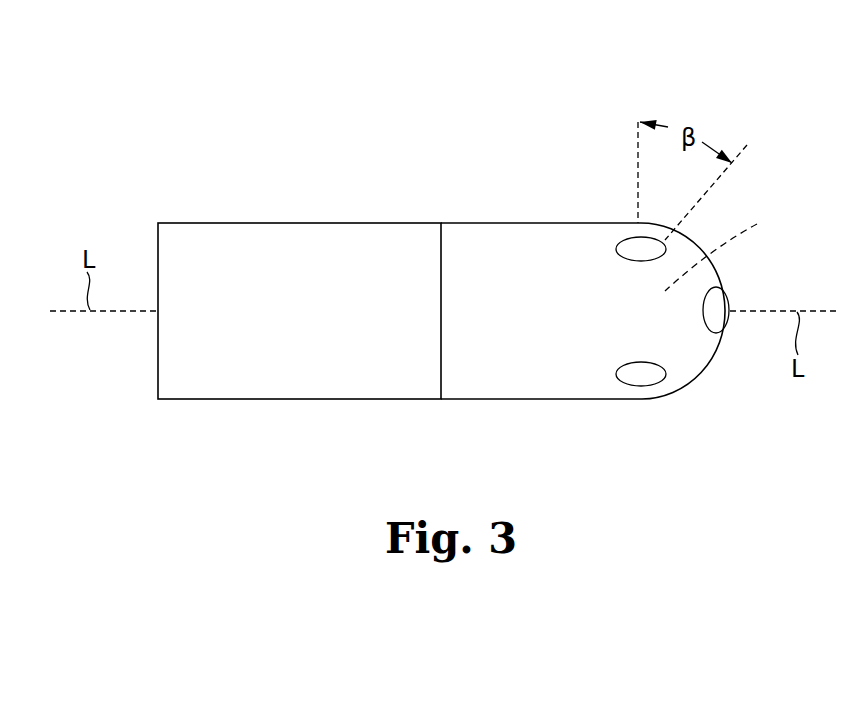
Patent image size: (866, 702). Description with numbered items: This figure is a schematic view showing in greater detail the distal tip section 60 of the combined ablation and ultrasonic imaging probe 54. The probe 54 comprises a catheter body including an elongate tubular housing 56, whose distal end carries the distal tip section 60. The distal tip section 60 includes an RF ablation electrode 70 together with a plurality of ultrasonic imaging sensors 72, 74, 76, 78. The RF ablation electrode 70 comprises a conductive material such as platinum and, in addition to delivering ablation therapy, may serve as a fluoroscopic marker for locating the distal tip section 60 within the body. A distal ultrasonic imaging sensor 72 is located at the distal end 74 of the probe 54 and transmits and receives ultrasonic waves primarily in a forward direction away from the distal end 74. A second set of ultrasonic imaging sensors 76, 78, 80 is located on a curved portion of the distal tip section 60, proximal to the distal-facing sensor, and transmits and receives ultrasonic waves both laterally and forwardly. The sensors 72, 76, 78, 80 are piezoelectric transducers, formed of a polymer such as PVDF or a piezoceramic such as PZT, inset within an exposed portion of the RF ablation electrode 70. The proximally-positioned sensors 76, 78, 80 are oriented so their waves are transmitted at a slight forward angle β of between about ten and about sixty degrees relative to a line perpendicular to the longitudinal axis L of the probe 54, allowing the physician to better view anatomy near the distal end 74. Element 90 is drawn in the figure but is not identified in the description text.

The combined ablation and ultrasonic imaging probe 54 is at (358, 105).
The elongate tubular housing 56 is at (268, 400).
The distal tip section 60 is at (527, 183).
The RF ablation electrode 70 is at (543, 370).
The distal ultrasonic imaging sensor 72 is at (717, 311).
The distal end 74 is at (717, 342).
The ultrasonic imaging sensor 76 is at (645, 247).
The ultrasonic imaging sensor 78 is at (727, 252).
The ultrasonic imaging sensor 80 is at (641, 376).
The tip sidewall 90 is at (662, 391).